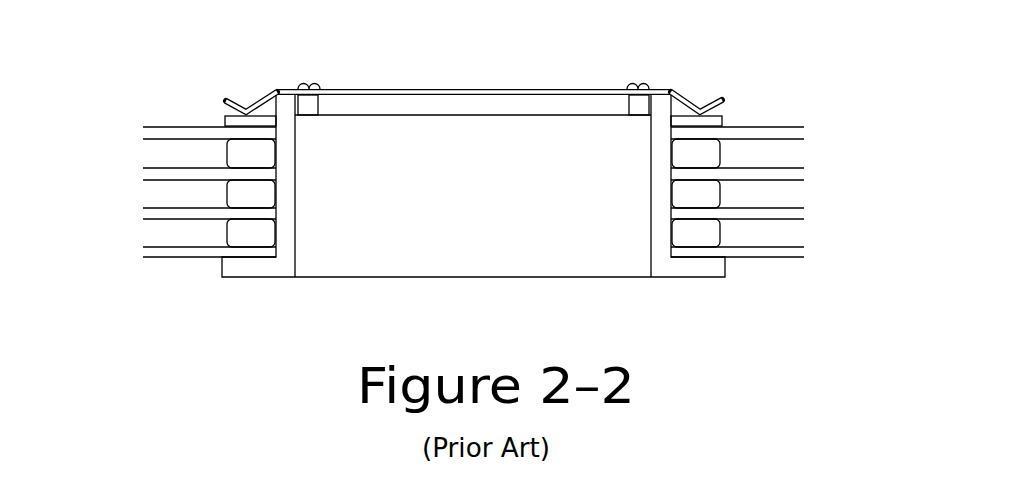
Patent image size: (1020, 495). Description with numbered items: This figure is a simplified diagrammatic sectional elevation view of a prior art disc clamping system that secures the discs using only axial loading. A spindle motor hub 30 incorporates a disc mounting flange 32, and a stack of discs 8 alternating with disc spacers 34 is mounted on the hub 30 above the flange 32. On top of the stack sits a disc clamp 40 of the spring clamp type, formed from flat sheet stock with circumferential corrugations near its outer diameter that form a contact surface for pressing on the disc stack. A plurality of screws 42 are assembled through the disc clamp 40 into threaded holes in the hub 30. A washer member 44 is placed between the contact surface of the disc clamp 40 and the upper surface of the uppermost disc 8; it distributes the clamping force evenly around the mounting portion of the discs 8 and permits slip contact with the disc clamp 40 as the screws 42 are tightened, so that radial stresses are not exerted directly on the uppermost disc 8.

The disc 8 is at (800, 250).
The spindle motor hub 30 is at (413, 107).
The disc mounting flange 32 is at (693, 265).
The disc spacer 34 is at (240, 236).
The disc clamp 40 is at (280, 88).
The screw 42 is at (647, 82).
The washer member 44 is at (722, 117).